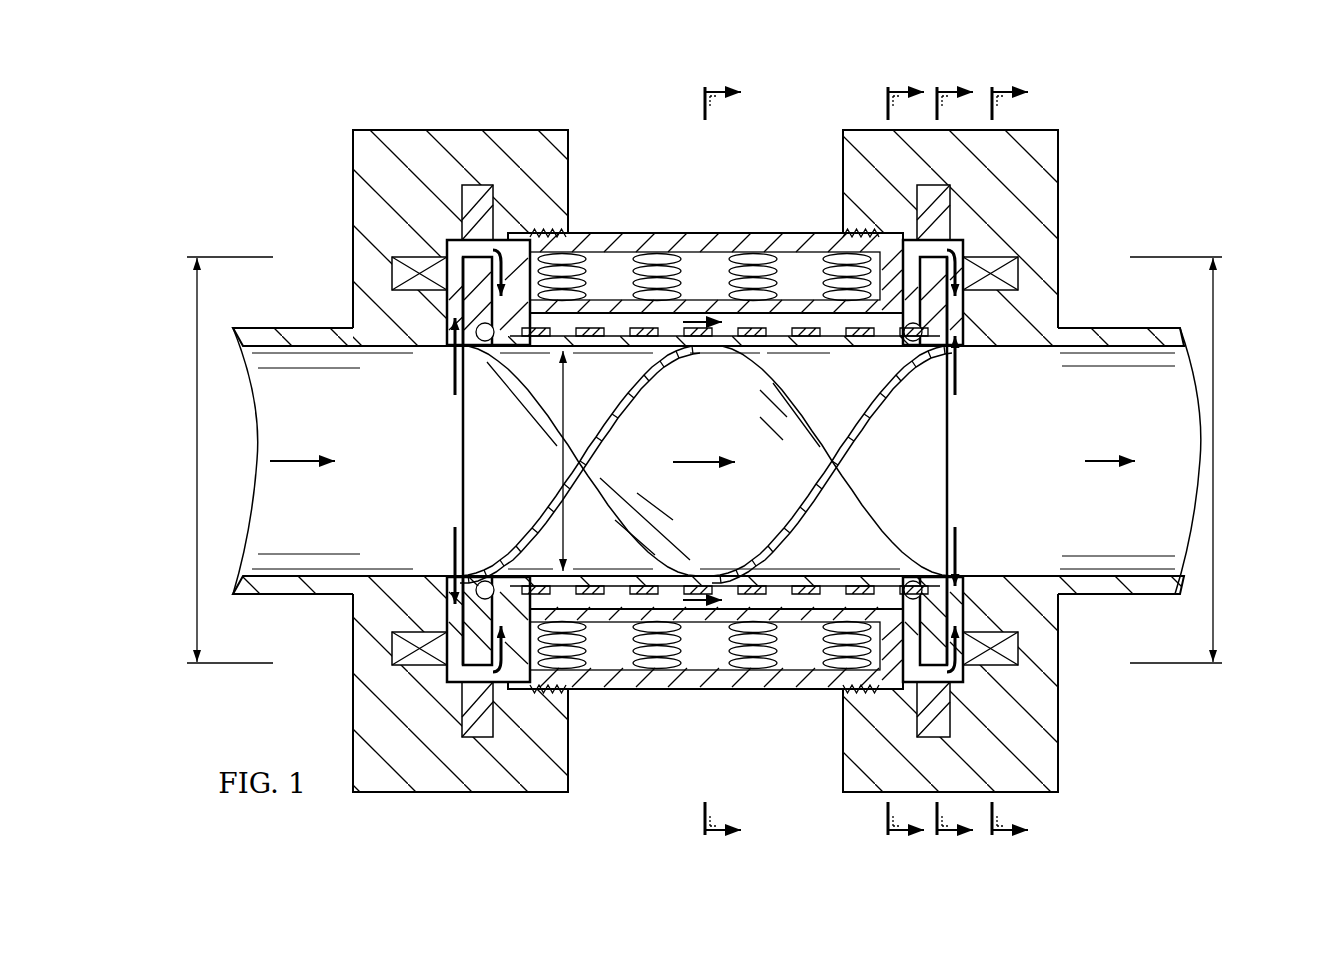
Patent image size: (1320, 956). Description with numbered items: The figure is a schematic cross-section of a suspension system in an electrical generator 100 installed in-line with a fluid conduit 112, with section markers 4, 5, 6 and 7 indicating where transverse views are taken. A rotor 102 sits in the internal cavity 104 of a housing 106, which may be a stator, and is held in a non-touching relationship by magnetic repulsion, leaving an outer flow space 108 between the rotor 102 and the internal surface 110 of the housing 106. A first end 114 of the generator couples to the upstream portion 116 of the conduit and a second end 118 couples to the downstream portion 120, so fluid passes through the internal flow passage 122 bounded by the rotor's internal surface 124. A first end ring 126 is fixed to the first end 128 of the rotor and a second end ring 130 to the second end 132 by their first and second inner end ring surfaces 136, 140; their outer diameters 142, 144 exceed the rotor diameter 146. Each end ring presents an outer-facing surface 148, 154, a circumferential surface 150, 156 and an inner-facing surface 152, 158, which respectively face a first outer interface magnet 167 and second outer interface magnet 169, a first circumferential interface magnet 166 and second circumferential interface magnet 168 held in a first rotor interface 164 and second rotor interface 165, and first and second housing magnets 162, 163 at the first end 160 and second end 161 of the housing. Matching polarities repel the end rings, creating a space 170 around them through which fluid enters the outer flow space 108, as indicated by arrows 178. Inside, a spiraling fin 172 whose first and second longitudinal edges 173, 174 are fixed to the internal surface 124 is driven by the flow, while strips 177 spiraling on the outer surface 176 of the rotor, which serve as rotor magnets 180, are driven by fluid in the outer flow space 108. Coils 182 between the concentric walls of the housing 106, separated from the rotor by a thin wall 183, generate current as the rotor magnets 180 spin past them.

The electrical generator 100 is at (222, 136).
The rotor 102 is at (543, 350).
The internal cavity 104 is at (765, 312).
The housing 106 is at (652, 248).
The outer flow space 108 is at (800, 608).
The internal surface 110 is at (616, 608).
The fluid conduit 112 is at (253, 328).
The first end 114 is at (347, 326).
The upstream portion 116 is at (270, 594).
The second end 118 is at (1145, 594).
The downstream portion 120 is at (1110, 348).
The internal flow passage 122 is at (578, 555).
The internal surface 124 is at (818, 345).
The first end ring 126 is at (478, 338).
The first end 128 is at (462, 425).
The second end ring 130 is at (996, 262).
The second end 132 is at (949, 470).
The first inner end ring surface 136 is at (490, 347).
The second inner end ring surface 140 is at (910, 337).
The outer diameter 142 is at (195, 460).
The outer diameter 144 is at (1215, 460).
The diameter 146 is at (560, 460).
The outer-facing surface 148 is at (445, 282).
The circumferential surface 150 is at (515, 255).
The inner-facing surface 152 is at (500, 265).
The outer-facing surface 154 is at (988, 300).
The circumferential surface 156 is at (862, 225).
The inner-facing surface 158 is at (870, 240).
The first end 160 is at (530, 240).
The second end 161 is at (918, 585).
The first housing magnet 162 is at (520, 262).
The second housing magnet 163 is at (878, 250).
The first rotor interface 164 is at (353, 160).
The second rotor interface 165 is at (1040, 133).
The first circumferential interface magnet 166 is at (470, 207).
The first outer interface magnet 167 is at (392, 278).
The second circumferential interface magnet 168 is at (1008, 222).
The second outer interface magnet 169 is at (988, 258).
The space 170 is at (447, 248).
The fin 172 is at (528, 540).
The first longitudinal edge 173 is at (760, 362).
The second longitudinal edge 174 is at (782, 535).
The outer surface 176 is at (855, 600).
The strips 177 is at (625, 330).
The arrows 178 is at (452, 390).
The rotor magnets 180 is at (800, 588).
The coils 182 is at (686, 278).
The wall 183 is at (695, 347).
The section line 4- 4 is at (719, 462).
The section line 5- 5 is at (902, 462).
The section line 6- 6 is at (951, 462).
The section line 7- 7 is at (1006, 462).